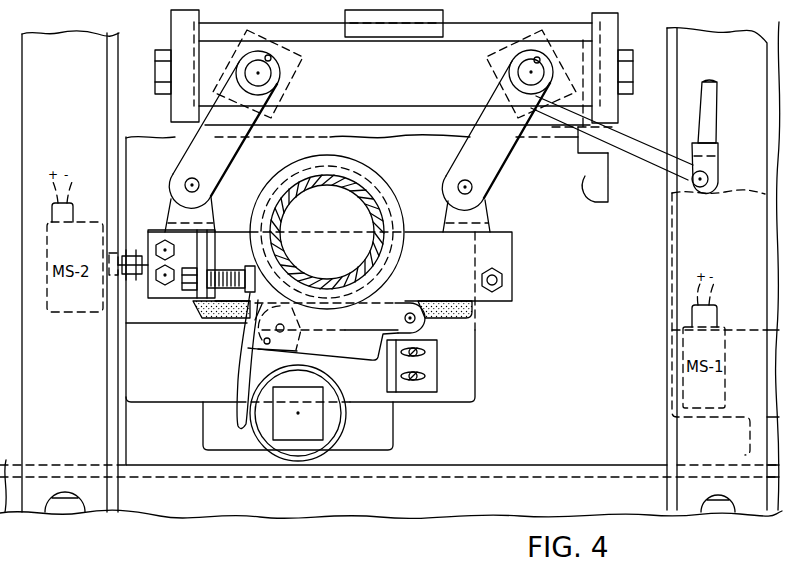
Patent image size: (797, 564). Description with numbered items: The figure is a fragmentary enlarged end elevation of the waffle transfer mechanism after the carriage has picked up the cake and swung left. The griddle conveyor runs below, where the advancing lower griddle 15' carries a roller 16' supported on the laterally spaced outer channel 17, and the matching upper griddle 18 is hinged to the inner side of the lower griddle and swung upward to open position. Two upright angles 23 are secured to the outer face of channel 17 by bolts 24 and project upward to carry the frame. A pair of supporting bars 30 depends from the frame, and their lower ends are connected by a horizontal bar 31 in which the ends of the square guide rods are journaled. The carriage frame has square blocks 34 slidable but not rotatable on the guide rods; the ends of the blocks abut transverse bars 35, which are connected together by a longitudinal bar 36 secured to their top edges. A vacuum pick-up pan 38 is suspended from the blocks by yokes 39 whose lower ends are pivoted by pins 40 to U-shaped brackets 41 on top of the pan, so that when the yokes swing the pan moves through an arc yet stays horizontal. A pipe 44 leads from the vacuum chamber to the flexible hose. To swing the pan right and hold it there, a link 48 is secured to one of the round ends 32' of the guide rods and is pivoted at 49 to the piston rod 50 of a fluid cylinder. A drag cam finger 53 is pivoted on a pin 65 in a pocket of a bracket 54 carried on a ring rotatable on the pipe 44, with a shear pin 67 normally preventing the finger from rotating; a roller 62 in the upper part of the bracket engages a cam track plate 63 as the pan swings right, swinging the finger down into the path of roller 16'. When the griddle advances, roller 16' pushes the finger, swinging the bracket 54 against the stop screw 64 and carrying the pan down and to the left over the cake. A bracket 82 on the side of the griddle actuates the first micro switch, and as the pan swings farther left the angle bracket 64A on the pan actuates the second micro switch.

The advancing griddle 15' is at (328, 341).
The roller 16' is at (319, 413).
The outer channel 17 is at (214, 505).
The upper griddle 18 is at (129, 147).
The upright angles 23 is at (72, 397).
The bolts 24 is at (68, 514).
The supporting bars 30 is at (176, 25).
The horizontal bar 31 is at (414, 86).
The round ends of guide rods 32' is at (394, 72).
The square blocks 34 is at (300, 62).
The transverse bars 35 is at (416, 120).
The longitudinal bar 36 is at (441, 21).
The vacuum pick-up pan 38 is at (503, 245).
The yokes 39 is at (195, 155).
The pins 40 is at (185, 186).
The U-shaped brackets 41 is at (178, 209).
The pipe 44 is at (350, 185).
The link 48 is at (647, 158).
The pivot 49 is at (711, 179).
The piston rod 50 is at (712, 114).
The drag cam finger 53 is at (245, 376).
The bracket 54 is at (351, 352).
The roller 62 is at (416, 312).
The cam track plate 63 is at (585, 178).
The stop screw 64 is at (232, 281).
The angle bracket 64A is at (157, 290).
The pin 65 is at (284, 331).
The shear pin 67 is at (263, 341).
The bracket 82 is at (423, 396).